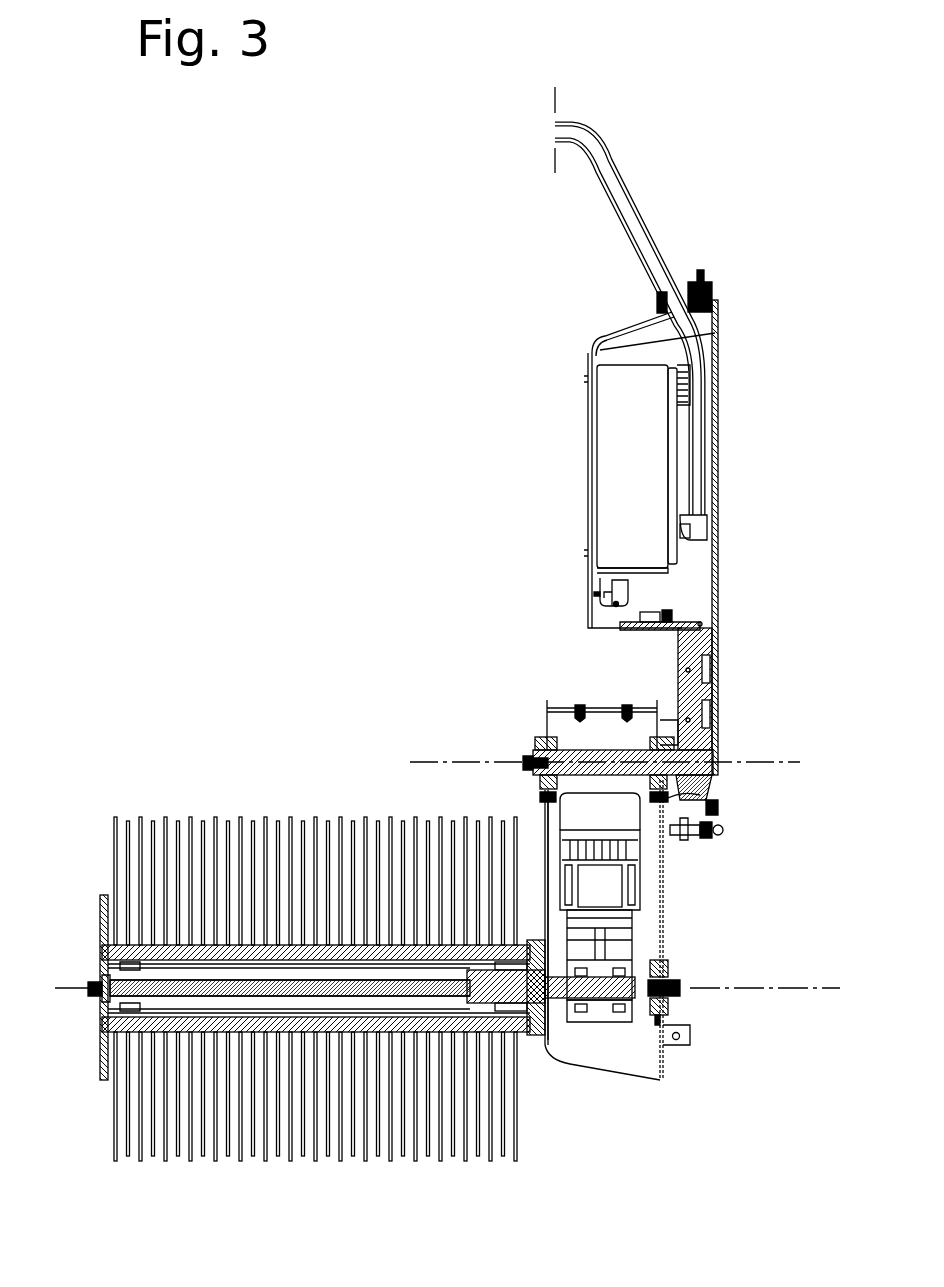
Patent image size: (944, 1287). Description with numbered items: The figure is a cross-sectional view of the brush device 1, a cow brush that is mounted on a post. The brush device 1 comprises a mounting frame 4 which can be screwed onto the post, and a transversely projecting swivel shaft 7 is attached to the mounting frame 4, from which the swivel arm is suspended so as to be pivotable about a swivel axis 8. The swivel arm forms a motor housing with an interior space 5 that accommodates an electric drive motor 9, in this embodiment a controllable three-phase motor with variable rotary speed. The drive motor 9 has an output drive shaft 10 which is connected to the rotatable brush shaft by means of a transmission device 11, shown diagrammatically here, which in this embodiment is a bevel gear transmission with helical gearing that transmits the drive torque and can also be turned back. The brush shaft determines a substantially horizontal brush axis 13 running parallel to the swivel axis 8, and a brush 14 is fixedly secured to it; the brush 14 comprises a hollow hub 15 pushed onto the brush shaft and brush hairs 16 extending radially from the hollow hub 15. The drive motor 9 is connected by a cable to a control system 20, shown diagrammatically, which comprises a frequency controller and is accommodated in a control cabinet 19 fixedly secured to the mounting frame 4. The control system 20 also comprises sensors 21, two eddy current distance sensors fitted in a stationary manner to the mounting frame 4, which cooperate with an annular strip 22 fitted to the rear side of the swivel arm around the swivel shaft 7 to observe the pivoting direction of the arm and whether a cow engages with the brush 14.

The brush device 1 is at (463, 468).
The mounting frame 4 is at (716, 574).
The interior space 5 is at (650, 880).
The swivel shaft 7 is at (600, 745).
The swivel axis 8 is at (768, 762).
The electric drive motor 9 is at (625, 830).
The output drive shaft 10 is at (600, 955).
The transmission device 11 is at (600, 1010).
The brush axis 13 is at (75, 988).
The brush 14 is at (177, 811).
The hollow hub 15 is at (300, 950).
The brush hairs 16 is at (274, 825).
The control cabinet 19 is at (590, 440).
The control system 20 is at (612, 518).
The sensors 21 is at (690, 800).
The annular strip 22 is at (690, 725).